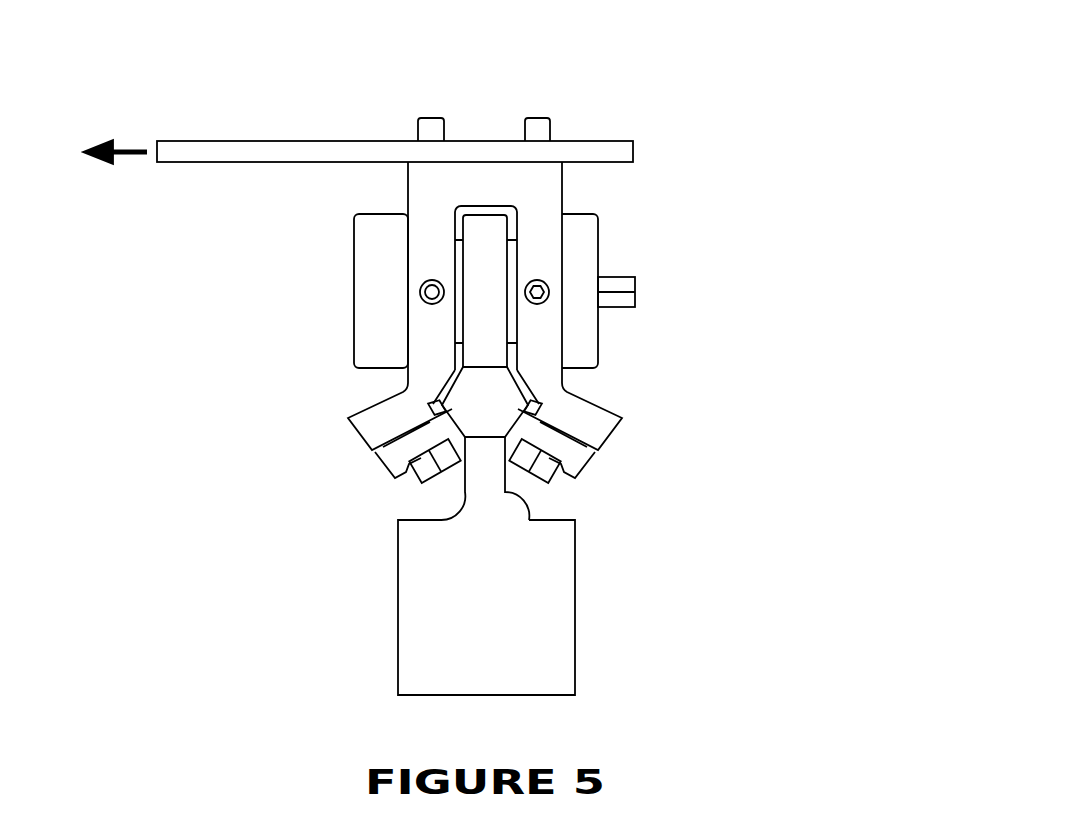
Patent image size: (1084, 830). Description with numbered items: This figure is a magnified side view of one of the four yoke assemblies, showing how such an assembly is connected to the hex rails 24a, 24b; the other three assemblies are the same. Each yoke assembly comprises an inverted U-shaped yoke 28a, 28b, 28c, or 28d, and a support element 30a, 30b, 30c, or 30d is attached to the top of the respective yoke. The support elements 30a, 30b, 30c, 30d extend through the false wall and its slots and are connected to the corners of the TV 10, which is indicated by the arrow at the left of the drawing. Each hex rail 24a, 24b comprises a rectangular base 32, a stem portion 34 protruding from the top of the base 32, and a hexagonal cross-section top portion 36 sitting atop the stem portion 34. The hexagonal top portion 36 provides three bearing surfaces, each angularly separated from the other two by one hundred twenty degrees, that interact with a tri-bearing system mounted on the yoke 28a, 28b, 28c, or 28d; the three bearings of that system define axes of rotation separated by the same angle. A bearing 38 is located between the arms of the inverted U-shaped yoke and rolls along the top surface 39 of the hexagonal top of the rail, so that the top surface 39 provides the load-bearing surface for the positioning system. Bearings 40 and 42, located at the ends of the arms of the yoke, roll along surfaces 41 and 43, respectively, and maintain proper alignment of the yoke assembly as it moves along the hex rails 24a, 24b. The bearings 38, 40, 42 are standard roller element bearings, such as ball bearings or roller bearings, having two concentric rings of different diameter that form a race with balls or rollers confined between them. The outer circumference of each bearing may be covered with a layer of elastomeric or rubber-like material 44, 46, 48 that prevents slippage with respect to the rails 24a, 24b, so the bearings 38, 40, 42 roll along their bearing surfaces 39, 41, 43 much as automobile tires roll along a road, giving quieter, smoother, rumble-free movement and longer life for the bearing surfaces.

The TV 10 is at (130, 147).
The hex rail 24a is at (486, 607).
The hex rail 24b is at (486, 607).
The inverted U-shaped yoke 28a is at (583, 272).
The inverted U-shaped yoke 28b is at (583, 272).
The inverted U-shaped yoke 28c is at (583, 272).
The inverted U-shaped yoke 28d is at (562, 178).
The support element 30a is at (485, 83).
The support element 30b is at (485, 83).
The support element 30c is at (485, 83).
The support element 30d is at (587, 150).
The rectangular base 32 is at (429, 607).
The stem portion 34 is at (473, 473).
The hexagonal cross-section top portion 36 is at (485, 404).
The bearing 38 is at (478, 227).
The top surface 39 is at (485, 390).
The bearing 40 is at (410, 473).
The bearing surface 41 is at (450, 418).
The bearing 42 is at (562, 470).
The bearing surface 43 is at (533, 412).
The layer of elastomeric or rubber-like material 44 is at (500, 312).
The layer of elastomeric or rubber-like material 46 is at (392, 459).
The layer of elastomeric or rubber-like material 48 is at (583, 460).